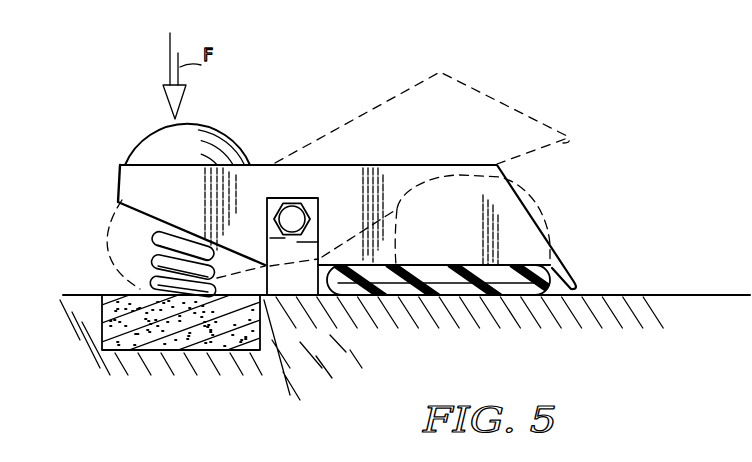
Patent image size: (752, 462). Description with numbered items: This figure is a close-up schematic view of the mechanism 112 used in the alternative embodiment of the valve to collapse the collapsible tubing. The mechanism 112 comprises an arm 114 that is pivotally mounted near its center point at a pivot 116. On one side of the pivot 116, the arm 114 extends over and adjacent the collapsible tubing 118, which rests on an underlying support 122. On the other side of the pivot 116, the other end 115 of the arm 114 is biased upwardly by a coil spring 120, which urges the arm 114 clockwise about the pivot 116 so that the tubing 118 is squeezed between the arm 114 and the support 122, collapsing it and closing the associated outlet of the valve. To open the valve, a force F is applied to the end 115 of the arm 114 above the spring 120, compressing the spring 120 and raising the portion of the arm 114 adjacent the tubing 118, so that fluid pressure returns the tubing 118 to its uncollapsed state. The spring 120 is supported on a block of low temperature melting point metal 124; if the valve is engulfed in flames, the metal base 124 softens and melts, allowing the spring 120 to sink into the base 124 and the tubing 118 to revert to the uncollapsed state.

The mechanism 112 is at (262, 137).
The arm 114 is at (367, 118).
The end of arm 115 is at (137, 156).
The pivot 116 is at (290, 220).
The collapsible tubing 118 is at (447, 265).
The coil spring 120 is at (150, 241).
The underlying support 122 is at (402, 335).
The block of low temperature melting point metal 124 is at (122, 298).